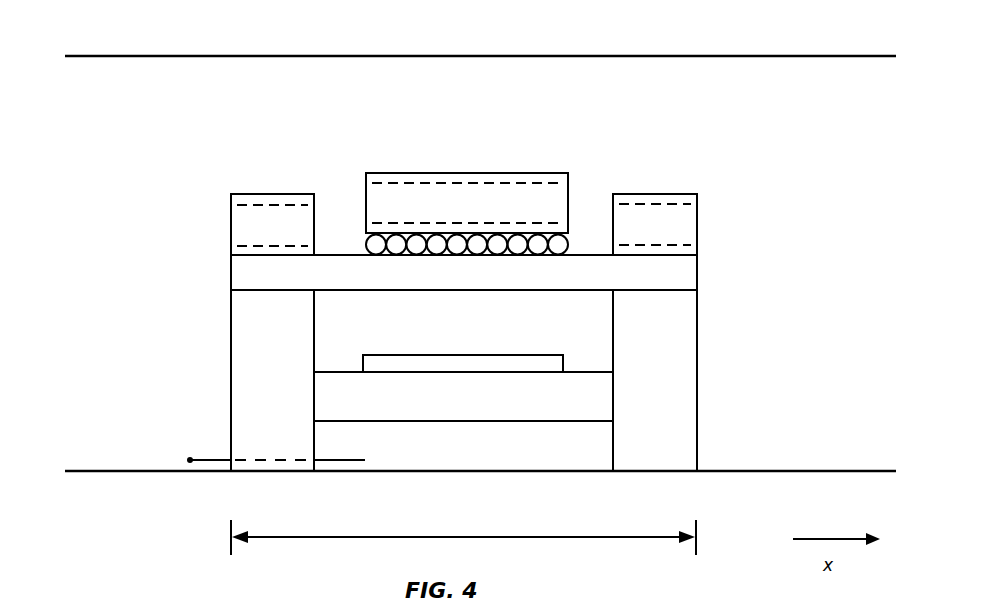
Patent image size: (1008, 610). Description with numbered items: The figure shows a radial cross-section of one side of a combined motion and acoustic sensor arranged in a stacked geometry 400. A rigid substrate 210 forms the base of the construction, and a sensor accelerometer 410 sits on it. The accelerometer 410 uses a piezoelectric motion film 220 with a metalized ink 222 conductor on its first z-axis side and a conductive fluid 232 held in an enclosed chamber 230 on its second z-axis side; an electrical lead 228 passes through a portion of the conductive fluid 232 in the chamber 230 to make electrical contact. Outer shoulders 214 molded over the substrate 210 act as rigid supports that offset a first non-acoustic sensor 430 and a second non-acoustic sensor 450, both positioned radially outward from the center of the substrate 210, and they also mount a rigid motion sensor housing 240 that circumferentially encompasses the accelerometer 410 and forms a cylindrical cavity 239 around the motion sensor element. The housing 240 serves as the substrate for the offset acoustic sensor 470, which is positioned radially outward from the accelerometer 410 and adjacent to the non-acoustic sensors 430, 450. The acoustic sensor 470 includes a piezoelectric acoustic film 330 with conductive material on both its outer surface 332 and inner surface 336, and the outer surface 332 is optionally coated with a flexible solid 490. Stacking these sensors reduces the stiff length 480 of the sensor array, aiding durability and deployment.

The stacked geometry 400 is at (145, 36).
The flexible solid 490 is at (779, 55).
The substrate 210 is at (779, 470).
The first non-acoustic sensor 430 is at (243, 166).
The second non-acoustic sensor 450 is at (686, 164).
The acoustic sensor 470 is at (467, 128).
The sensor accelerometer 410 is at (183, 370).
The motion sensor housing 240 is at (698, 272).
The outer shoulders 214 is at (231, 347).
The piezoelectric acoustic film 330 is at (463, 201).
The outer surface 332 is at (522, 172).
The inner surface 336 is at (570, 229).
The cylindrical cavity 239 is at (463, 331).
The metalized ink 222 is at (530, 355).
The piezoelectric motion film 220 is at (613, 397).
The conductive fluid 232 is at (469, 443).
The enclosed chamber 230 is at (313, 445).
The electrical lead 228 is at (213, 459).
The stiff length 480 is at (513, 535).